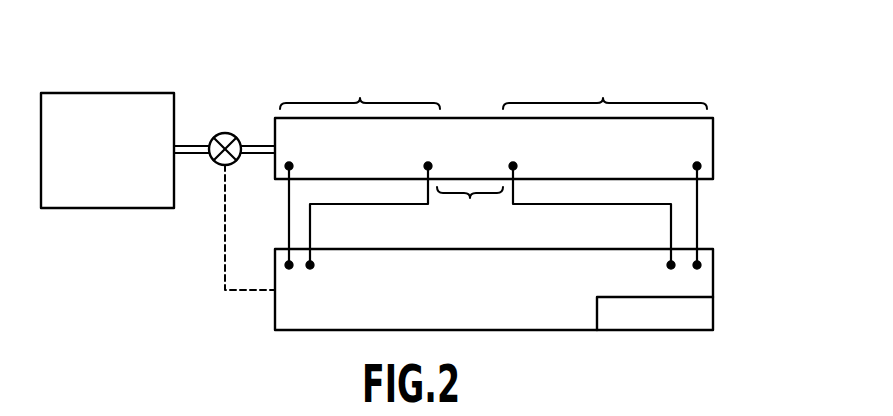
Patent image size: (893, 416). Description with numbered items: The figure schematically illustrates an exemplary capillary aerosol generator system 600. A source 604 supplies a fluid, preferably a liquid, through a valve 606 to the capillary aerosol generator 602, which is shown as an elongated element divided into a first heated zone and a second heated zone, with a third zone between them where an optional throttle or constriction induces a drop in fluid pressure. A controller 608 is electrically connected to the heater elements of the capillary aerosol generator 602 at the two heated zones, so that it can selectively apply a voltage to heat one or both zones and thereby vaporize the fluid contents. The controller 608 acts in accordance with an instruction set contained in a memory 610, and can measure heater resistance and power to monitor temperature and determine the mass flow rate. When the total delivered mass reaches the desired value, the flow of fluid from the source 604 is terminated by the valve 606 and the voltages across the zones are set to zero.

The capillary aerosol generator system 600 is at (132, 66).
The capillary aerosol generator 602 is at (735, 141).
The source 604 is at (118, 197).
The valve 606 is at (228, 132).
The controller 608 is at (711, 271).
The memory 610 is at (705, 312).